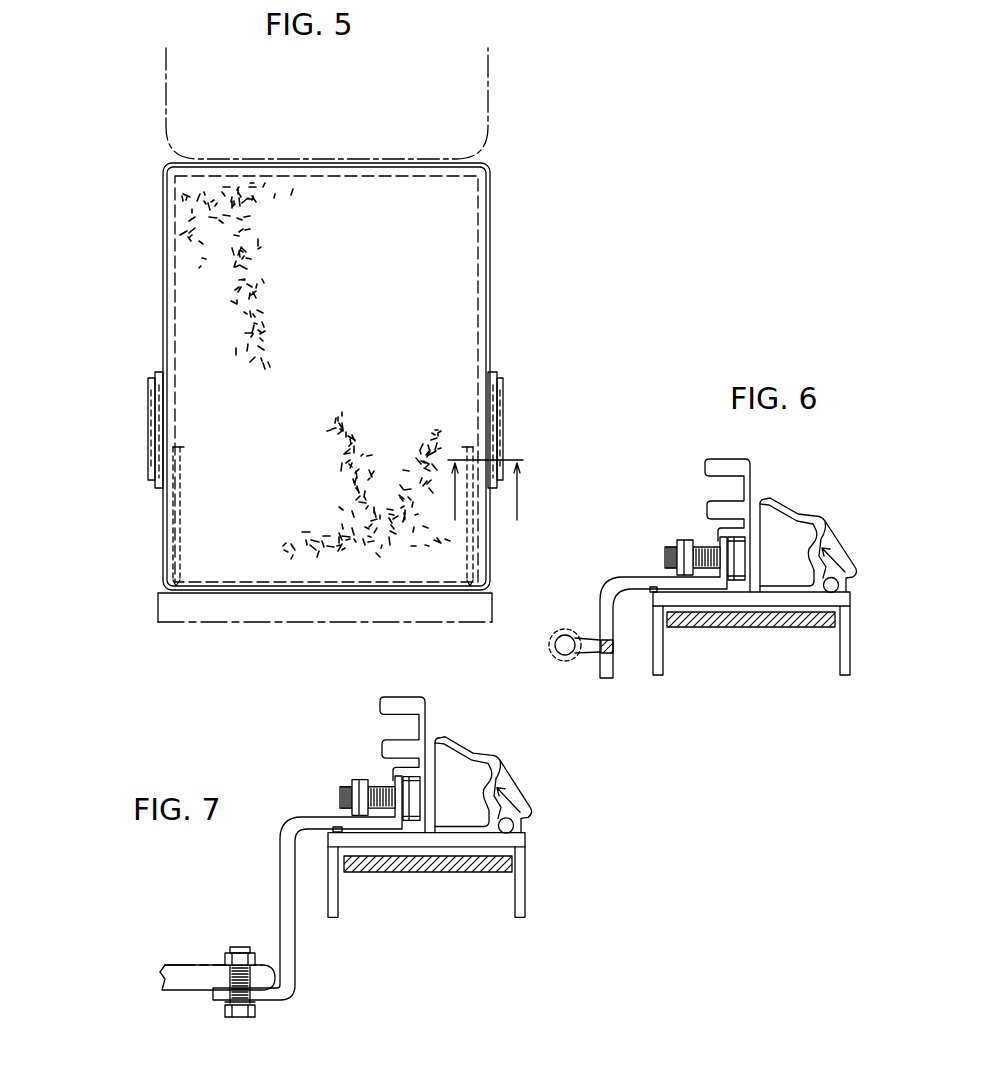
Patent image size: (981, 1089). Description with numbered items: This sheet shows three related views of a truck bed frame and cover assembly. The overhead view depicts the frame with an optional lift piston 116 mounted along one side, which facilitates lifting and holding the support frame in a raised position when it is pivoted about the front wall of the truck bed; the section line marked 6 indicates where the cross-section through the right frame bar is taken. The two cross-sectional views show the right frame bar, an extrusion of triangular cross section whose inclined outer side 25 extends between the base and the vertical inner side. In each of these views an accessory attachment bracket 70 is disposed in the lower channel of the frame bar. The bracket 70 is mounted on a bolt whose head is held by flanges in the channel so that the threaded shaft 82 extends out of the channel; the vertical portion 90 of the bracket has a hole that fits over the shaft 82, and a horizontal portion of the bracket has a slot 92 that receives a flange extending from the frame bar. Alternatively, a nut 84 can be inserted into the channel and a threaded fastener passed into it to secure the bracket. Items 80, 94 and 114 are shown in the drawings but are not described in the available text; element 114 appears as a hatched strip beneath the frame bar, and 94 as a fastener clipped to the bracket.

In FIG. 5, the section line 6- 6 is at (486, 507).
In FIG. 6, the inclined outer side 25 is at (812, 513).
In FIG. 7, the inclined outer side 25 is at (457, 753).
In FIG. 6, the accessory attachment bracket 70 is at (613, 591).
In FIG. 7, the accessory attachment bracket 70 is at (285, 833).
In FIG. 6, the bolt head 80 is at (745, 545).
In FIG. 6, the shaft of the bolt 82 is at (665, 551).
In FIG. 7, the shaft of the bolt 82 is at (316, 769).
In FIG. 7, the nut 84 is at (337, 787).
In FIG. 6, the vertical portion 90 is at (703, 541).
In FIG. 7, the vertical portion 90 is at (331, 746).
In FIG. 6, the slot 92 is at (652, 592).
In FIG. 7, the slot 92 is at (325, 833).
In FIG. 6, the retaining clip 94 is at (554, 648).
In FIG. 6, the resilient gasket strip 114 is at (770, 633).
In FIG. 7, the resilient gasket strip 114 is at (456, 875).
In FIG. 5, the lift piston 116 is at (173, 538).